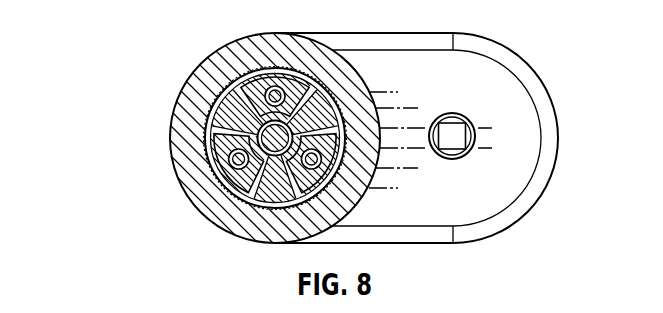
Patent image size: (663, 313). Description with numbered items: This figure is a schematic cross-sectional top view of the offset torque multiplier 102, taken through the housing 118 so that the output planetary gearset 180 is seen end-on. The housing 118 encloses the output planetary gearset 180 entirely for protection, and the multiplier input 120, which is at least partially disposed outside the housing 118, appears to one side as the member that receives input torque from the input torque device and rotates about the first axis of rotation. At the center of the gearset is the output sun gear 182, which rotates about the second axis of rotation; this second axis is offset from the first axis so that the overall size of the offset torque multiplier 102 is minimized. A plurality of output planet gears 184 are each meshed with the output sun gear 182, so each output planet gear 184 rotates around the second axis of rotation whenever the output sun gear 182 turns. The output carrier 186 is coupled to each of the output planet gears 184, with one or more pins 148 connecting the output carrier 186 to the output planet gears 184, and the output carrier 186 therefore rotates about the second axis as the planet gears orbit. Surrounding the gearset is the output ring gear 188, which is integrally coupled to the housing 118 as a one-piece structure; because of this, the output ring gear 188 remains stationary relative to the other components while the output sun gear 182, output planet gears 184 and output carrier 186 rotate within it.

The offset torque multiplier 102 is at (149, 119).
The housing 118 is at (511, 48).
The multiplier input 120 is at (474, 151).
The pins 148 is at (279, 86).
The output planetary gearset 180 is at (223, 88).
The output sun gear 182 is at (303, 104).
The output planet gears 184 is at (262, 63).
The output carrier 186 is at (256, 198).
The output ring gear 188 is at (276, 208).